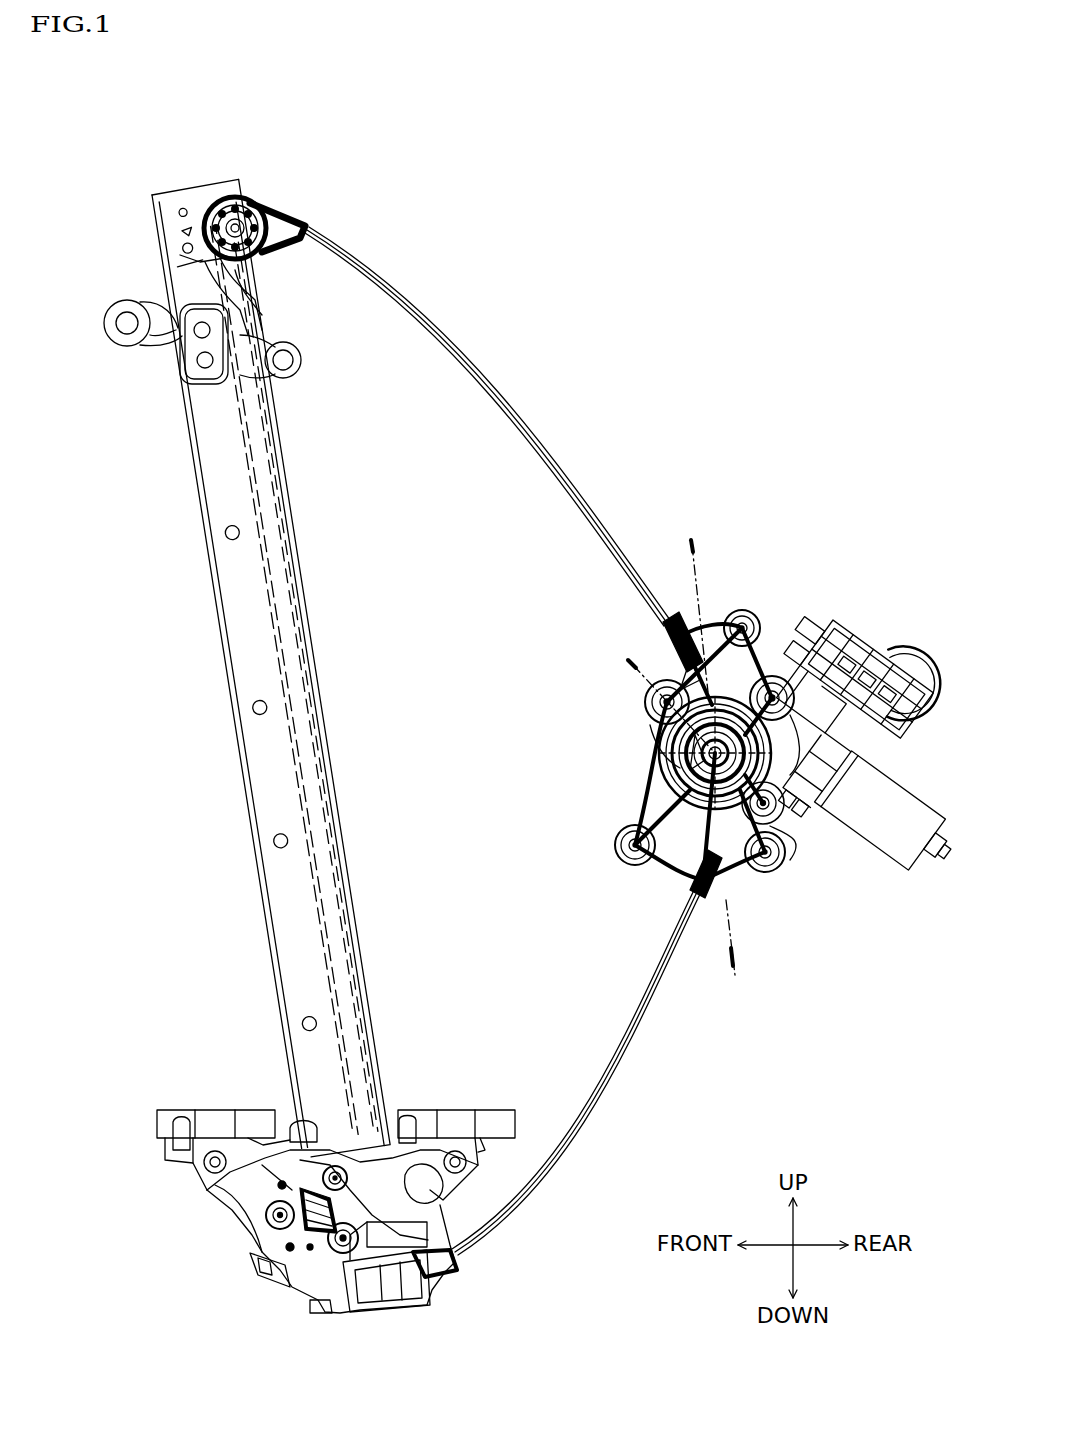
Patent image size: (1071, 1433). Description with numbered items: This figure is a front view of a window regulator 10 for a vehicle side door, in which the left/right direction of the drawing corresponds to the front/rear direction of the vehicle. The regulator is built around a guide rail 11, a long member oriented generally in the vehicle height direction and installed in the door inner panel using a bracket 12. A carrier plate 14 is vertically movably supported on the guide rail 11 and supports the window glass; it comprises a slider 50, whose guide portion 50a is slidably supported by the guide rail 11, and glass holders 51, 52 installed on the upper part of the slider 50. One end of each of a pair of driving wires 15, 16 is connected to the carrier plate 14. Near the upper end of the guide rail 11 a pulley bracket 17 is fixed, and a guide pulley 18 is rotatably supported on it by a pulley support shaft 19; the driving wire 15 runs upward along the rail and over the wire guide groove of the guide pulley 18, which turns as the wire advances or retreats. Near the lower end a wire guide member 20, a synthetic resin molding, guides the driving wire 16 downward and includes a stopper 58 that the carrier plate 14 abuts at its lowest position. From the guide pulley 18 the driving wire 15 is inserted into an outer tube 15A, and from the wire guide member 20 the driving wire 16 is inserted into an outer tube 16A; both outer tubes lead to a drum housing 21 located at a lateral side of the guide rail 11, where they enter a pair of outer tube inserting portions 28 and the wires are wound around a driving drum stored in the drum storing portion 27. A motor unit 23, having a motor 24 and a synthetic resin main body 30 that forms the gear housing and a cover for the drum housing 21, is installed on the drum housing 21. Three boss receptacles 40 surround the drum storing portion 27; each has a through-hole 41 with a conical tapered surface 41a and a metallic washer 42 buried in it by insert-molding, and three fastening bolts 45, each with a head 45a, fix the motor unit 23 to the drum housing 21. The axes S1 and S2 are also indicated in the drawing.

The window regulator 10 is at (575, 316).
The guide rail 11 is at (245, 655).
The bracket 12 is at (133, 333).
The carrier plate 14 is at (319, 1200).
The driving wire 15 is at (487, 426).
The outer tube 15A is at (510, 395).
The driving wire 16 is at (600, 1066).
The outer tube 16A is at (612, 1085).
The pulley bracket 17 is at (262, 200).
The guide pulley 18 is at (232, 208).
The pulley support shaft 19 is at (240, 218).
The wire guide member 20 is at (446, 1282).
The drum housing 21 is at (602, 840).
The motor unit 23 is at (863, 628).
The motor 24 is at (885, 840).
The drum storing portion 27 is at (612, 845).
The outer tube inserting portions 28 is at (668, 633).
The main body 30 is at (843, 765).
The boss receptacles 40 is at (689, 733).
The through-hole 41 is at (689, 733).
The conical tapered surface 41a is at (772, 690).
The washer 42 is at (773, 695).
The fastening bolts 45 is at (648, 738).
The head 45a is at (648, 738).
The slider 50 is at (331, 1193).
The guide portion 50a is at (295, 1126).
The glass holder 51 is at (218, 1118).
The glass holder 52 is at (505, 1118).
The stopper 58 is at (396, 1282).
The drum axis S1 is at (632, 673).
The pulley axis S2 is at (688, 550).